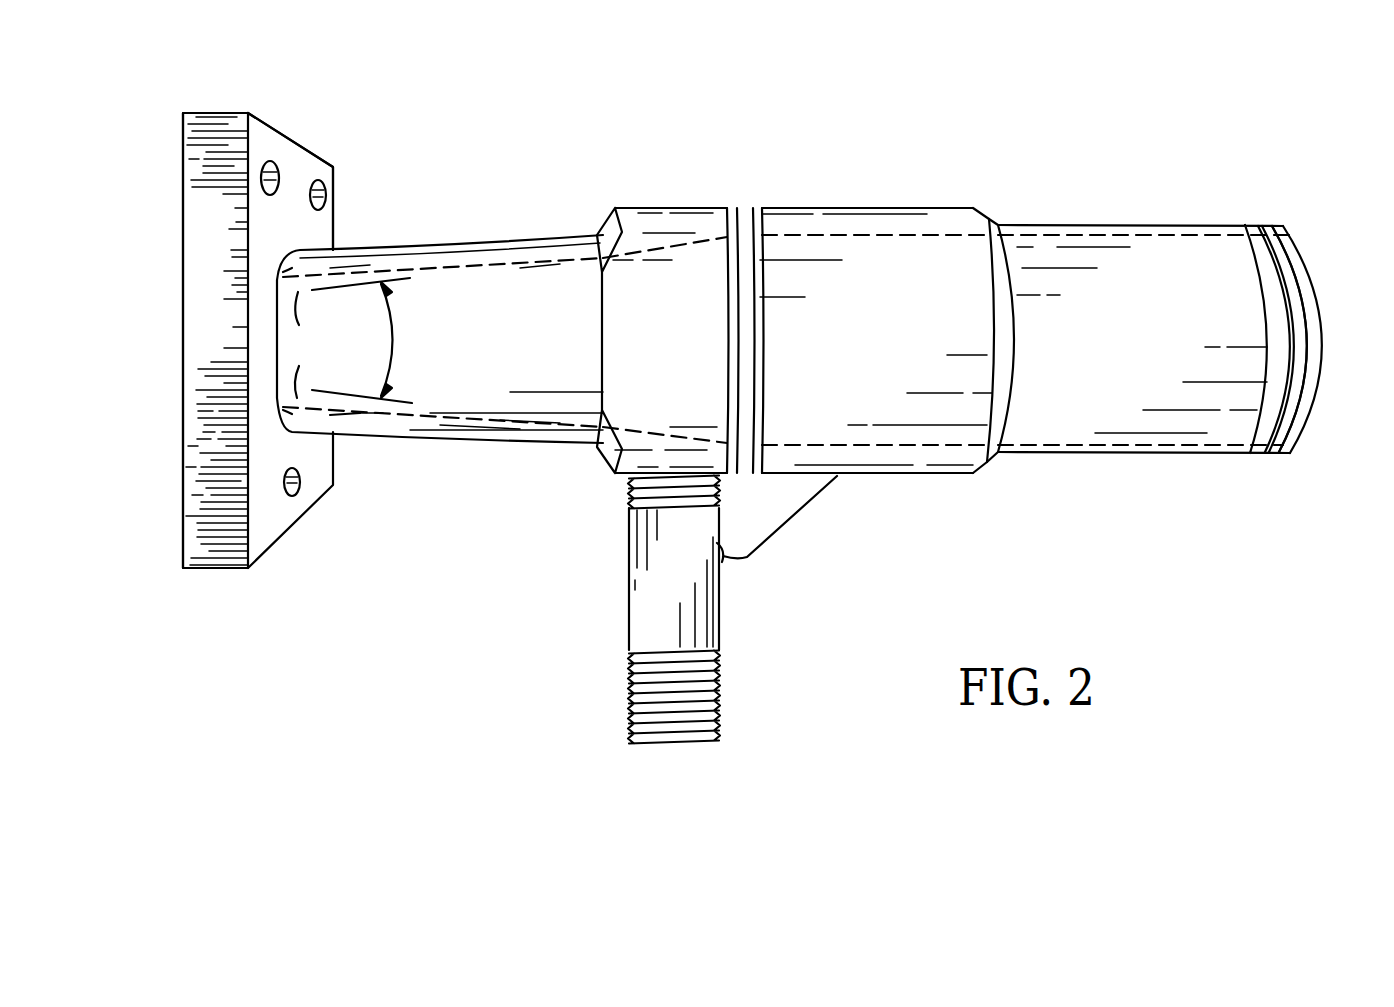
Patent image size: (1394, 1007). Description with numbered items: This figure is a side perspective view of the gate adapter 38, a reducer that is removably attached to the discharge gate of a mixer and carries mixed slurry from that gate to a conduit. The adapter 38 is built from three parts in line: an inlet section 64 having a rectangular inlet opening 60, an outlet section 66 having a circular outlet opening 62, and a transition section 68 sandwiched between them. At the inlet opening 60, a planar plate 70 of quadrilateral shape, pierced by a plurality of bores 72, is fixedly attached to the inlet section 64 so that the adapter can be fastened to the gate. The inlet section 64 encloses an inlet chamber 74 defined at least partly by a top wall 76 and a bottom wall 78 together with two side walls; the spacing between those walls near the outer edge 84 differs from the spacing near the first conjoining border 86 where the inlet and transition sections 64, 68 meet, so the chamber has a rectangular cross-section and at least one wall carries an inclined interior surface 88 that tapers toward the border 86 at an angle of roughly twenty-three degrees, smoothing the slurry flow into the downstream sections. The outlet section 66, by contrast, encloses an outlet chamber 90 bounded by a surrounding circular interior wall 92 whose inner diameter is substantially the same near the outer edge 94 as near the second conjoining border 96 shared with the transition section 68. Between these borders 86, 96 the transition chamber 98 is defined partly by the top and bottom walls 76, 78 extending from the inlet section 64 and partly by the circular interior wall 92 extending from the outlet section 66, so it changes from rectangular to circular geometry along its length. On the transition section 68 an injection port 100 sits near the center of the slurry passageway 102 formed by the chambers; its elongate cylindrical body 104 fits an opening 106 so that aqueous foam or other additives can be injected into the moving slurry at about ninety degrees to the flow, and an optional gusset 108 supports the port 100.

The gate adapter 38 is at (901, 207).
The inlet opening 60 is at (185, 363).
The outlet opening 62 is at (1317, 294).
The inlet section 64 is at (433, 412).
The outlet section 66 is at (1121, 432).
The transition section 68 is at (905, 478).
The planar plate 70 is at (296, 162).
The bores 72 is at (268, 164).
The inlet chamber 74 is at (472, 300).
The top wall 76 is at (395, 258).
The bottom wall 78 is at (350, 410).
The outer edge 84 is at (185, 262).
The first conjoining border 86 is at (607, 219).
The inclined interior surface 88 is at (548, 268).
The outlet chamber 90 is at (1100, 292).
The circular interior wall 92 is at (1210, 228).
The outer edge 94 is at (1295, 243).
The second conjoining border 96 is at (987, 220).
The transition chamber 98 is at (806, 308).
The injection port 100 is at (630, 594).
The slurry passageway 102 is at (652, 292).
The elongate body 104 is at (698, 628).
The opening 106 is at (622, 476).
The gusset 108 is at (773, 519).